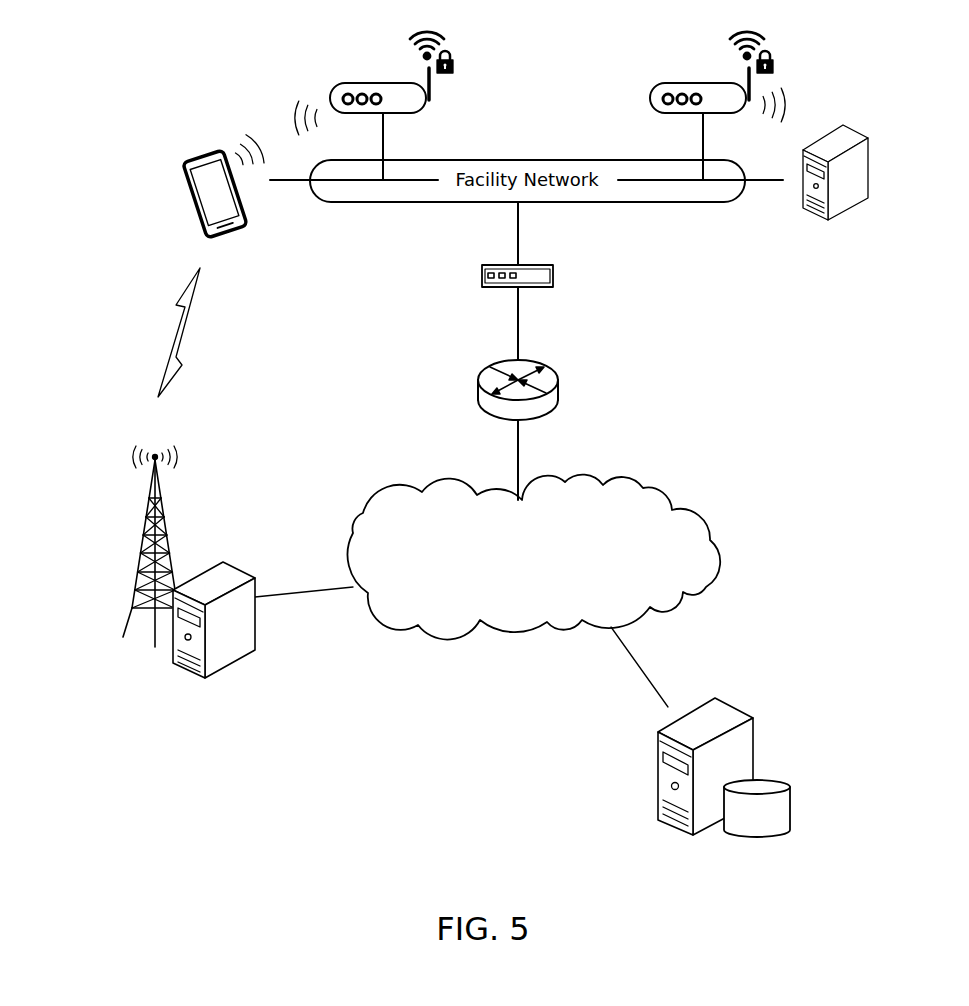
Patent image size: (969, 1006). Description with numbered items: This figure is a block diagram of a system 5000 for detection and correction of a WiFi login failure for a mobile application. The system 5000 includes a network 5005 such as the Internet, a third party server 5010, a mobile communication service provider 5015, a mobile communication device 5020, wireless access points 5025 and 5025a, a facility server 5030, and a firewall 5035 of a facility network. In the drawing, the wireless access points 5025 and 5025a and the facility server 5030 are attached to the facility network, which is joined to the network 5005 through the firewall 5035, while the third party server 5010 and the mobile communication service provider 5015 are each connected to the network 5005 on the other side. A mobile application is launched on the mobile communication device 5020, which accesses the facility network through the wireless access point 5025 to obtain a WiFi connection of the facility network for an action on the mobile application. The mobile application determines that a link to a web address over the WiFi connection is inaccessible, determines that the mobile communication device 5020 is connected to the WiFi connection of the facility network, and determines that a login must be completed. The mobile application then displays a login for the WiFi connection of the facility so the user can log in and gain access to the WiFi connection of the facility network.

The system 5000 is at (120, 65).
The network 5005 is at (410, 485).
The third party server 5010 is at (657, 765).
The mobile communication service provider 5015 is at (123, 613).
The mobile communication device 5020 is at (182, 162).
The wireless access point 5025 is at (352, 82).
The wireless access point 5025a is at (675, 82).
The facility server 5030 is at (837, 222).
The firewall 5035 is at (568, 275).